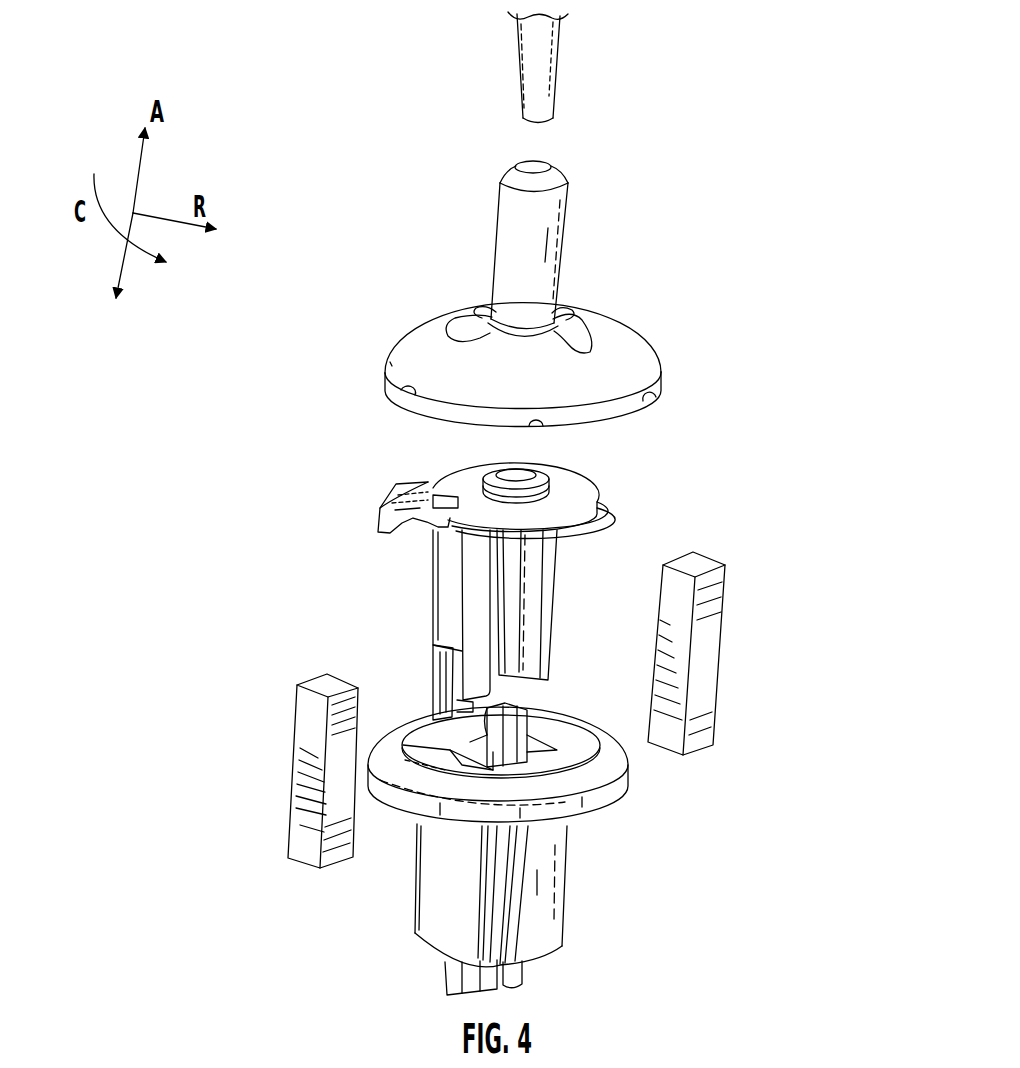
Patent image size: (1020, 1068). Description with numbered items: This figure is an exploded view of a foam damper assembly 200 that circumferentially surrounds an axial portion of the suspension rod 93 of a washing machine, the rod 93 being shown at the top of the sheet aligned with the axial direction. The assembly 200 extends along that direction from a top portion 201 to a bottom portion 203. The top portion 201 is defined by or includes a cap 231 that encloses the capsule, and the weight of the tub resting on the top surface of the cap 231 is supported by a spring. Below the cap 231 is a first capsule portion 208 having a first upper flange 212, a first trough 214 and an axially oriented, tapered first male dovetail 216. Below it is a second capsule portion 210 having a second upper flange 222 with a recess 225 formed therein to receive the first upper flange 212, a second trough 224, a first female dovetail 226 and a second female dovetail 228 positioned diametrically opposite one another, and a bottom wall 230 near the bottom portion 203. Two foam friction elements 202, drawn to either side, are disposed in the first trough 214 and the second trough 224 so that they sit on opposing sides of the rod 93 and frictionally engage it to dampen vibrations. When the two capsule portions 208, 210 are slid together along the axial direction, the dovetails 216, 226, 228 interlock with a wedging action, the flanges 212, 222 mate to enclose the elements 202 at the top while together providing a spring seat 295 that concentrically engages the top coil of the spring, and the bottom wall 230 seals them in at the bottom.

The suspension rod 93 is at (540, 66).
The foam damper assembly 200 is at (325, 378).
The top portion 201 is at (463, 266).
The cap 231 is at (620, 355).
The first capsule portion 208 is at (370, 561).
The first upper flange 212 is at (570, 495).
The spring seat 295 is at (407, 495).
The first male dovetail 216 is at (473, 598).
The first trough 214 is at (509, 603).
The foam friction elements 202 is at (707, 648).
The bottom portion 203 is at (549, 976).
The second upper flange 222 is at (603, 798).
The recess 225 is at (575, 758).
The second trough 224 is at (489, 746).
The first female dovetail 226 is at (467, 762).
The second female dovetail 228 is at (537, 737).
The second capsule portion 210 is at (547, 877).
The bottom wall 230 is at (410, 963).